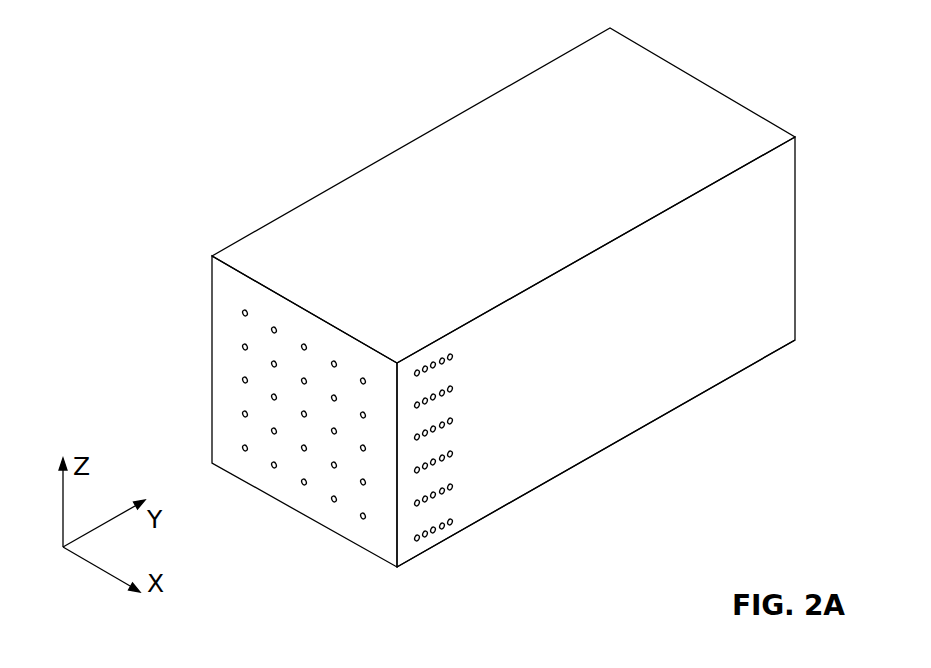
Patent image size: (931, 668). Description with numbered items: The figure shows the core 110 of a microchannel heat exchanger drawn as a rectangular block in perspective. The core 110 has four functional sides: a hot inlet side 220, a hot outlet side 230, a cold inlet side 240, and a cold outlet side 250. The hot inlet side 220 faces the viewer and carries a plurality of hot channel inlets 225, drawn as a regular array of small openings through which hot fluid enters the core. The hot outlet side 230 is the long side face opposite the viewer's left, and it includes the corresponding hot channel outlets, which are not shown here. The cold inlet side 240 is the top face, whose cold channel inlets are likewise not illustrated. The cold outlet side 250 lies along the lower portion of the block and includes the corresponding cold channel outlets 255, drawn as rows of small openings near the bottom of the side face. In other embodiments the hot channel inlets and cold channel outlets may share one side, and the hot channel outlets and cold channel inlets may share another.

The core 110 is at (471, 295).
The hot inlet side 220 is at (287, 505).
The hot channel inlets 225 is at (232, 345).
The hot outlet side 230 is at (702, 82).
The cold inlet side 240 is at (507, 87).
The cold outlet side 250 is at (510, 503).
The cold channel outlets 255 is at (445, 545).